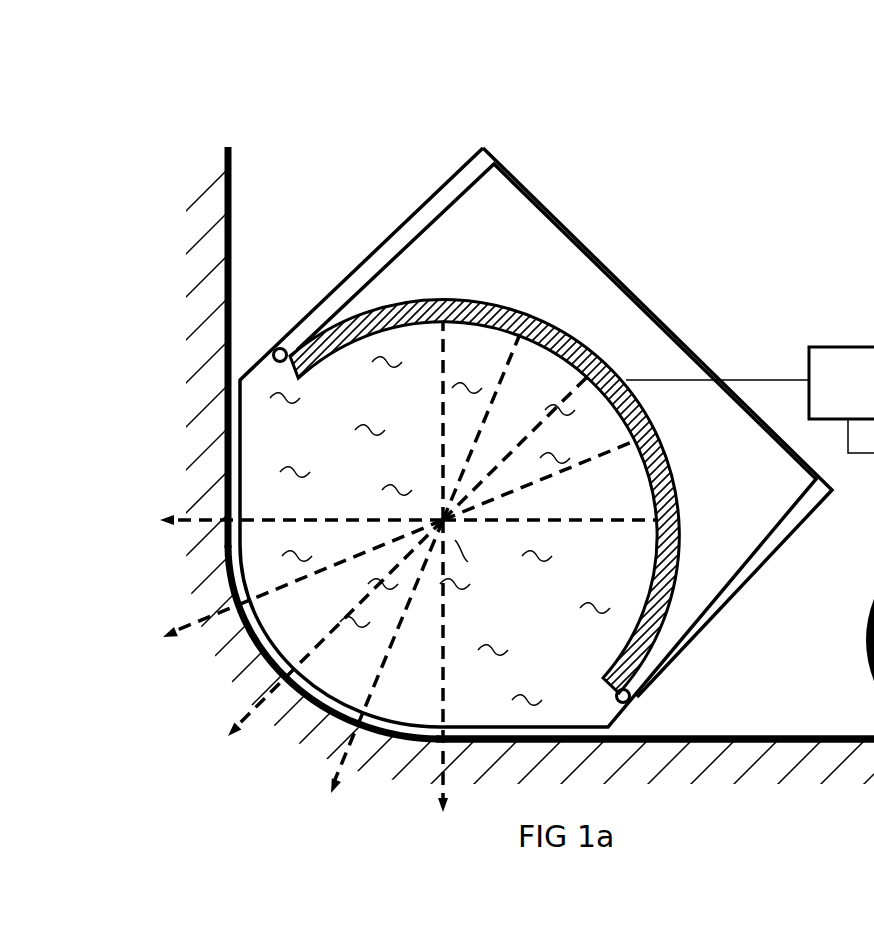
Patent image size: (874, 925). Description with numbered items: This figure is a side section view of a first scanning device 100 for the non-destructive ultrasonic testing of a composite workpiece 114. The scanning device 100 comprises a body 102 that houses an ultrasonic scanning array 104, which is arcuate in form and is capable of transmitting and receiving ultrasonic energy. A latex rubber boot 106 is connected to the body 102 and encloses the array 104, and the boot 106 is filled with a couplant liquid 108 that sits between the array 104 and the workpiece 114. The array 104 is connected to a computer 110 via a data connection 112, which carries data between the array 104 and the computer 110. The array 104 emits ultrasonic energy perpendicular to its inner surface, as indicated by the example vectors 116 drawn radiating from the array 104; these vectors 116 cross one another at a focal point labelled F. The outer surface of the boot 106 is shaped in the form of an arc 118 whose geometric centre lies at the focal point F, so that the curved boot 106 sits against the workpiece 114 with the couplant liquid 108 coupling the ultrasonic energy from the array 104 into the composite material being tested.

The scanning device 100 is at (368, 150).
The body 102 is at (581, 275).
The ultrasonic scanning array 104 is at (476, 300).
The latex rubber boot 106 is at (275, 346).
The couplant liquid 108 is at (525, 621).
The computer 110 is at (858, 398).
The data connection 112 is at (745, 380).
The composite workpiece 114 is at (222, 440).
The example vectors 116 is at (440, 405).
The arc 118 is at (272, 642).